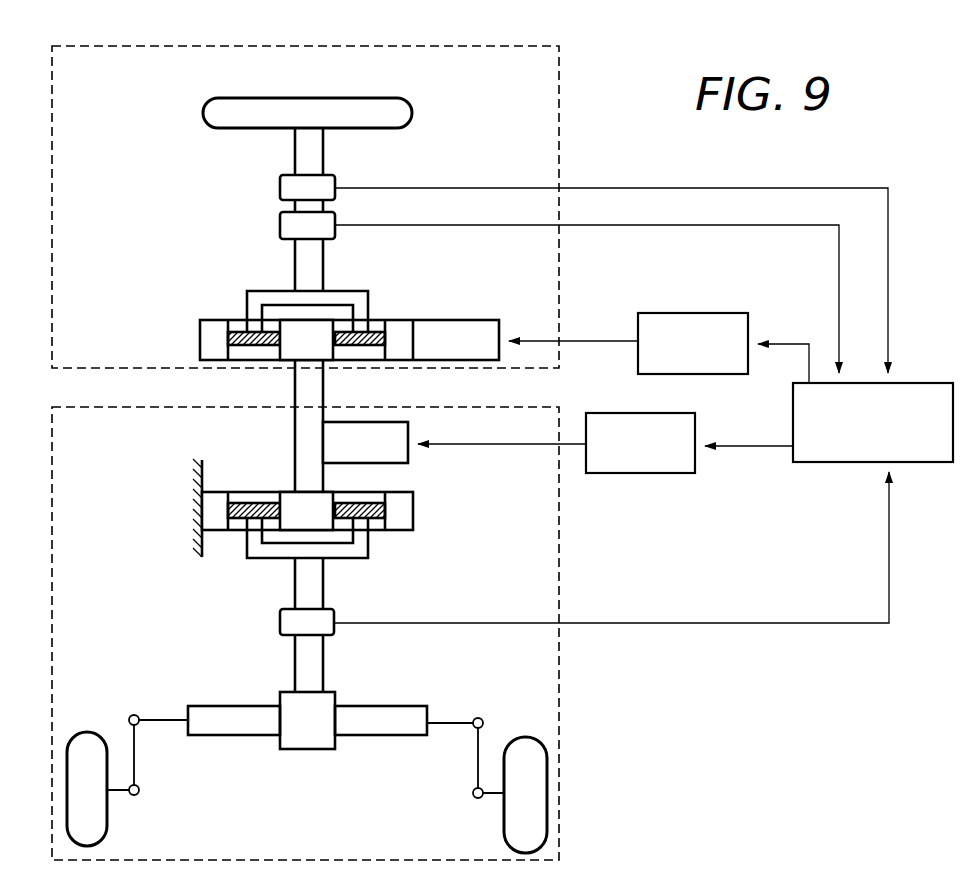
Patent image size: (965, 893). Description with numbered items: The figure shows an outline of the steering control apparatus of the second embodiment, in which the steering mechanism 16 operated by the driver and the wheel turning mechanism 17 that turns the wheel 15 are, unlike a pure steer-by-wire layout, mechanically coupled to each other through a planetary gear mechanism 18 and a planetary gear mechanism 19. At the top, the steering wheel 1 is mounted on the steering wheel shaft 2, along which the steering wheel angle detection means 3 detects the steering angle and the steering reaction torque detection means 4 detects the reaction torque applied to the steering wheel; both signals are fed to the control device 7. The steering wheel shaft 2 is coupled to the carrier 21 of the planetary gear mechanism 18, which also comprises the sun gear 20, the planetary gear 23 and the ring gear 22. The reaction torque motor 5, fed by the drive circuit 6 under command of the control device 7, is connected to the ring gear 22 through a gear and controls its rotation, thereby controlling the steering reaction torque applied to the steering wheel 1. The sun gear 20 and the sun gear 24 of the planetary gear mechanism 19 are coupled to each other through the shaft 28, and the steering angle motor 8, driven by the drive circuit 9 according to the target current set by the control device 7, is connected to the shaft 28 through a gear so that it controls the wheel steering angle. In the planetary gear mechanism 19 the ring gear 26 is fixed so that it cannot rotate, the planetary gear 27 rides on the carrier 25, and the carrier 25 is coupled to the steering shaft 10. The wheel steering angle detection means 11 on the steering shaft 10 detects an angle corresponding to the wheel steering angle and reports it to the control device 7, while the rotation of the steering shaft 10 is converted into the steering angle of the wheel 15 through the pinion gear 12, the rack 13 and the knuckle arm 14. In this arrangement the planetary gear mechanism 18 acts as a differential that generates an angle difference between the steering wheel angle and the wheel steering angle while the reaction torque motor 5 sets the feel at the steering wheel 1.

The steering wheel 1 is at (365, 98).
The steering wheel shaft 2 is at (295, 142).
The steering wheel angle detection means 3 is at (285, 186).
The steering reaction torque detection means 4 is at (285, 222).
The reaction torque motor 5 is at (340, 319).
The drive circuit 6 is at (674, 313).
The control device 7 is at (920, 383).
The steering angle motor 8 is at (385, 463).
The drive circuit 9 is at (622, 413).
The steering shaft 10 is at (323, 580).
The wheel steering angle detection means 11 is at (281, 622).
The pinion gear 12 is at (298, 749).
The rack 13 is at (212, 735).
The knuckle arm 14 is at (478, 758).
The wheel 15 is at (95, 732).
The steering mechanism 16 is at (559, 108).
The wheel turning mechanism 17 is at (559, 538).
The planetary gear mechanism 18 is at (321, 333).
The planetary gear mechanism 19 is at (173, 508).
The sun gear 20 is at (290, 360).
The carrier 21 is at (262, 291).
The ring gear 22 is at (218, 318).
The planetary gear 23 is at (242, 360).
The sun gear 24 is at (288, 492).
The carrier 25 is at (262, 558).
The ring gear 26 is at (240, 492).
The planetary gear 27 is at (240, 518).
The shaft 28 is at (323, 386).